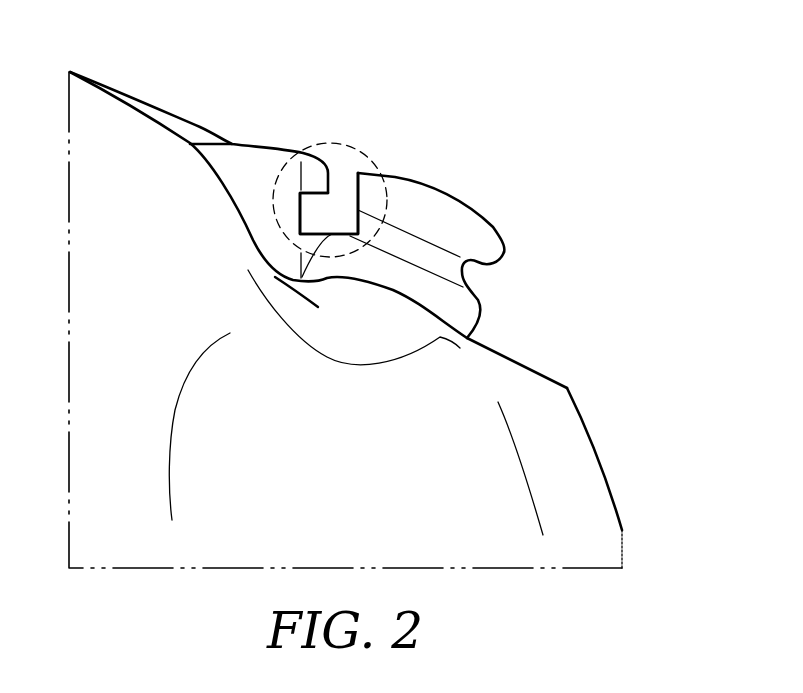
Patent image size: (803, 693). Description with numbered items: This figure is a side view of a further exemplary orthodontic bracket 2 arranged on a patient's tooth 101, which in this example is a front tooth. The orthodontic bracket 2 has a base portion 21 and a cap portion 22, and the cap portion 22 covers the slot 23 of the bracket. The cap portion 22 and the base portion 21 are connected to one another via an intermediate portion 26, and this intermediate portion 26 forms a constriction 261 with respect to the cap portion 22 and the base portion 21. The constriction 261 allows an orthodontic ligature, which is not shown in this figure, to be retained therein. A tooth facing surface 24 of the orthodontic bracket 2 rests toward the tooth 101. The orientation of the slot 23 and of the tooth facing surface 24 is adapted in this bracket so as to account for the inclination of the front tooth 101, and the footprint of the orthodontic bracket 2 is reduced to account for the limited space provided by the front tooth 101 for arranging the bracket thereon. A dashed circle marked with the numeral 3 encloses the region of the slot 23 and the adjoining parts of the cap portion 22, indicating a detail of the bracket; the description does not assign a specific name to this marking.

The orthodontic bracket 2 is at (489, 177).
The connecting structure detail 3 is at (315, 147).
The base portion 21 is at (463, 315).
The cap portion 22 is at (425, 202).
The slot 23 is at (337, 218).
The tooth facing surface 24 is at (450, 330).
The intermediate portion 26 is at (442, 258).
The constriction 261 is at (473, 275).
The tooth 101 is at (573, 457).